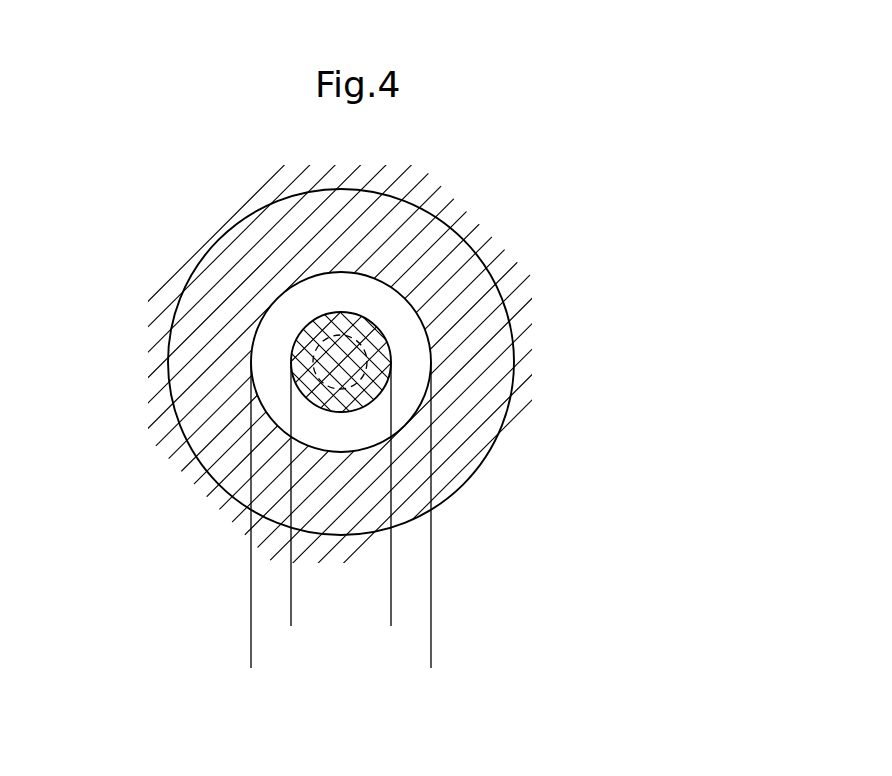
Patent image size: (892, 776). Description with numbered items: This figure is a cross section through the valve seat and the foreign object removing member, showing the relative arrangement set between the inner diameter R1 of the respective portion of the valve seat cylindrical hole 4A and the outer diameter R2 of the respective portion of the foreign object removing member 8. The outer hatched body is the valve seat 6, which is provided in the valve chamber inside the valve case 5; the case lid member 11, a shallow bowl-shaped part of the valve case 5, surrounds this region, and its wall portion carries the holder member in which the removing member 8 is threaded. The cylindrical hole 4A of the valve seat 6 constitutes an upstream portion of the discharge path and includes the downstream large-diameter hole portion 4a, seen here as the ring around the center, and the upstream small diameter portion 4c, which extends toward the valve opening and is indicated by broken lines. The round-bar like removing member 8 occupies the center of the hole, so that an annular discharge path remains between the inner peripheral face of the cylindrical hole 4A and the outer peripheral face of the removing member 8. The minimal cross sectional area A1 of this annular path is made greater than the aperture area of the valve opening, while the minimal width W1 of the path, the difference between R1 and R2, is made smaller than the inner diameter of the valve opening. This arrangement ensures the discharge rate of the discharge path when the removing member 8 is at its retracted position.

The cylindrical hole 4A is at (430, 369).
The large-diameter hole portion 4a is at (409, 319).
The small diameter portion 4c is at (368, 365).
The valve case 5 is at (413, 365).
The valve seat 6 is at (455, 209).
The foreign object removing member 8 is at (308, 333).
The case lid member 11 is at (513, 425).
The minimal cross sectional area A1 is at (270, 343).
The inner diameter R1 is at (419, 664).
The outer diameter R2 is at (379, 622).
The minimal width W1 is at (431, 618).